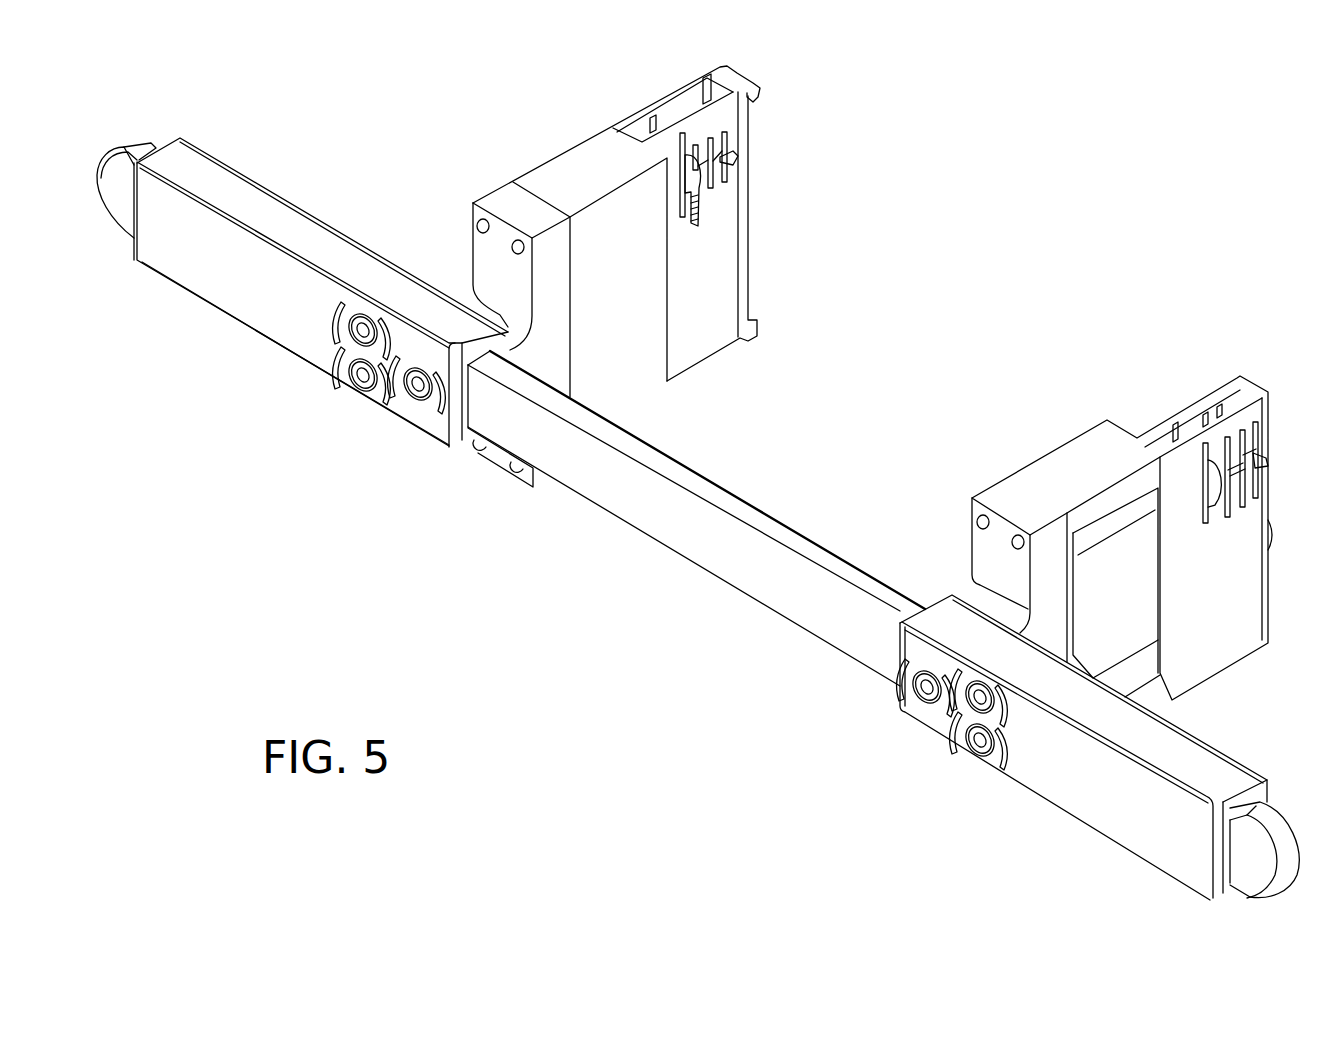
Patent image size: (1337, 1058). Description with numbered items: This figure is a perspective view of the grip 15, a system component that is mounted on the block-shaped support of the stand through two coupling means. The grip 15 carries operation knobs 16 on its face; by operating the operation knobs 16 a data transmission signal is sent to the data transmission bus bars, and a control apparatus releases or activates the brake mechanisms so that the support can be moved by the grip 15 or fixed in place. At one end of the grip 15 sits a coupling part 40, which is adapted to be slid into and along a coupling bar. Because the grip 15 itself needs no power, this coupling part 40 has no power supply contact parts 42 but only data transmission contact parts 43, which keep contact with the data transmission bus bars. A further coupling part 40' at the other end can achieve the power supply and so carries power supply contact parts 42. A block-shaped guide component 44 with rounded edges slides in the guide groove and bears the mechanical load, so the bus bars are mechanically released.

The grip 15 is at (555, 567).
The operation knobs 16 is at (357, 388).
The coupling part 40 is at (616, 211).
The further coupling part 40' is at (1122, 508).
The power supply contact parts 42 is at (1270, 462).
The data transmission contact parts 43 is at (738, 157).
The guide component 44 is at (699, 187).